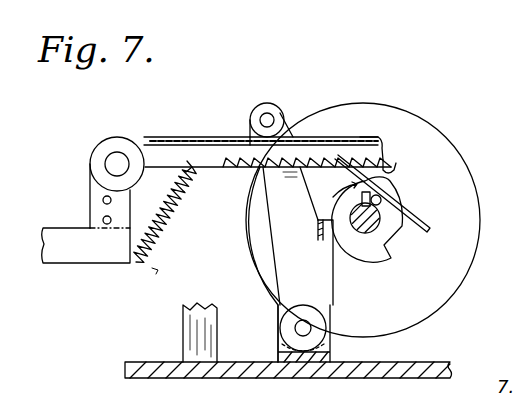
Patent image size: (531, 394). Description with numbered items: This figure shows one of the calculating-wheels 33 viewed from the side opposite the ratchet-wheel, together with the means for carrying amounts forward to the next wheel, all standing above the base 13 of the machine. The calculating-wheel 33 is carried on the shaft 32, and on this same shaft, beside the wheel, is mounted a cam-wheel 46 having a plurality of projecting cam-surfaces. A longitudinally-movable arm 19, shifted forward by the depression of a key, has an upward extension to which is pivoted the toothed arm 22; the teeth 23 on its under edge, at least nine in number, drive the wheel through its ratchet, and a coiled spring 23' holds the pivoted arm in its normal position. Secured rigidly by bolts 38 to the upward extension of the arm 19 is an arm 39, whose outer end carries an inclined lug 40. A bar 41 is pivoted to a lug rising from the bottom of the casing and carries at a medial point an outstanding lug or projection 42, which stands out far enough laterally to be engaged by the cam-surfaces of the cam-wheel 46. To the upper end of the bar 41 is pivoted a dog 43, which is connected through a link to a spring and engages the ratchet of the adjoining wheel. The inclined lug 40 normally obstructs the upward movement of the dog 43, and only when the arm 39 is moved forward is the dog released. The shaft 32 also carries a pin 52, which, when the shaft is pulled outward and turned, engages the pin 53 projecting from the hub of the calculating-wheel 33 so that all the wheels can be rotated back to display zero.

The base 13 is at (352, 378).
The longitudinally-movable arm 19 is at (69, 258).
The pivoted toothed arm 22 is at (183, 151).
The teeth 23 is at (280, 158).
The coiled spring 23' is at (169, 217).
The shaft 32 is at (366, 235).
The calculating-wheel 33 is at (466, 188).
The bolts 38 is at (103, 216).
The arm 39 is at (156, 128).
The inclined lug 40 is at (343, 137).
The bar 41 is at (290, 280).
The lug or projection 42 is at (322, 222).
The dog 43 is at (293, 123).
The cam-wheel 46 is at (402, 232).
The pin 52 is at (360, 199).
The pin 53 is at (428, 230).